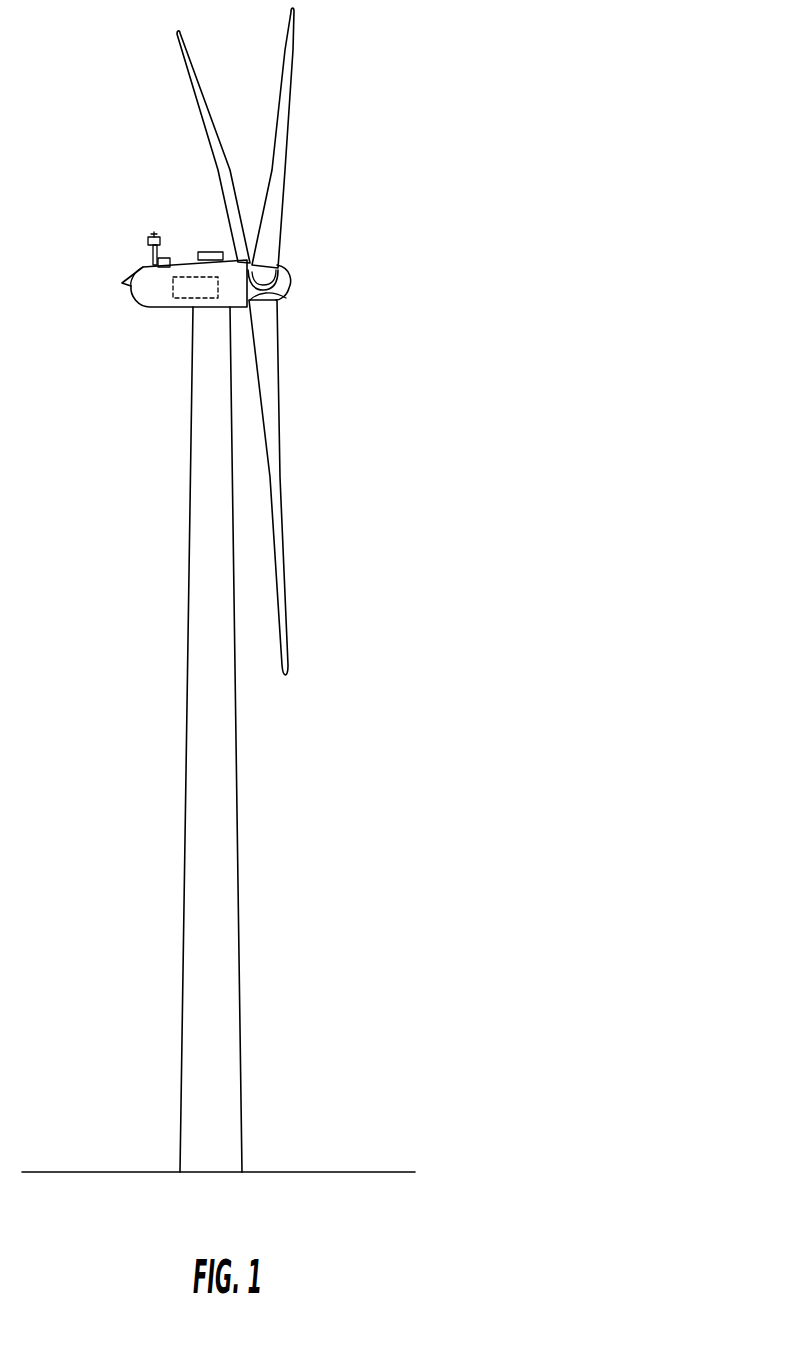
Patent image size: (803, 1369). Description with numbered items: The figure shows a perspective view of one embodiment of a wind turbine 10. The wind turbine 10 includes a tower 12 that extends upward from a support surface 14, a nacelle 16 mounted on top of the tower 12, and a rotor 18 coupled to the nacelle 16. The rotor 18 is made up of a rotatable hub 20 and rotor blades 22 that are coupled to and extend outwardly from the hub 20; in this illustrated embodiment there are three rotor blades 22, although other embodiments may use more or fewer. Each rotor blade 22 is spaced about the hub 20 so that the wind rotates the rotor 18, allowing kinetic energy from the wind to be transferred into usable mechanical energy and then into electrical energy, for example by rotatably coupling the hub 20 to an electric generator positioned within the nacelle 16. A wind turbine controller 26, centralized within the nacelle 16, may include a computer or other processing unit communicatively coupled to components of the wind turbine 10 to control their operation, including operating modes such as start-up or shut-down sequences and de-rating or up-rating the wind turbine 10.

The wind turbine 10 is at (392, 93).
The tower 12 is at (198, 857).
The support surface 14 is at (100, 1172).
The nacelle 16 is at (168, 308).
The rotor 18 is at (298, 253).
The rotatable hub 20 is at (288, 289).
The rotor blade 22 is at (277, 132).
The wind turbine controller 26 is at (173, 288).